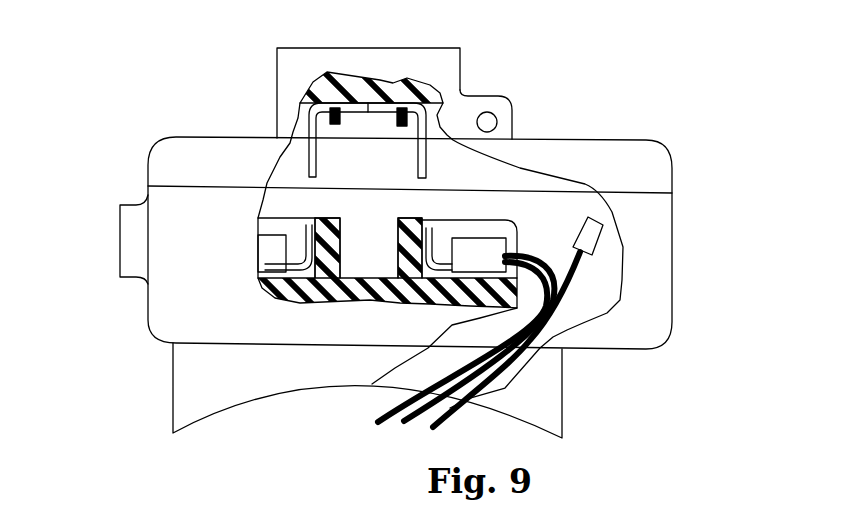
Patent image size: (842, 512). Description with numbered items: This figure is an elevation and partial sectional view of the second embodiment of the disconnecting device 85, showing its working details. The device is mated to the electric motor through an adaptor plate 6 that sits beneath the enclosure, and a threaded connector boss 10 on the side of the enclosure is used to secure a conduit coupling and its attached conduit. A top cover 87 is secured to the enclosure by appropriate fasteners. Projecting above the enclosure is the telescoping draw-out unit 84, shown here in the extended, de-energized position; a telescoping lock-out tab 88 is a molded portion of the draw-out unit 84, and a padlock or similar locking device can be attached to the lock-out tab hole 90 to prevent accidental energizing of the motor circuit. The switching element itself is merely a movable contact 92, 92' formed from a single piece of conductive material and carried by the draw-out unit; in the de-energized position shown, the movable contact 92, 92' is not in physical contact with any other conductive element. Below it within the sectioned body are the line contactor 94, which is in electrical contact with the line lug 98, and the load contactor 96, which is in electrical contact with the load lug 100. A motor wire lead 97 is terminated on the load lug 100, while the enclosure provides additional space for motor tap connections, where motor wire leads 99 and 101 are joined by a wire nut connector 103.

The adaptor plate 6 is at (563, 404).
The threaded connector boss 10 is at (124, 283).
The telescoping draw-out unit 84 is at (277, 97).
The disconnecting device 85 is at (673, 283).
The top cover 87 is at (673, 172).
The telescoping lock-out tab 88 is at (483, 94).
The lock-out tab hole 90 is at (498, 121).
The movable contact 92 is at (338, 140).
The movable contact 92' is at (397, 140).
The line contactor 94 is at (305, 222).
The load contactor 96 is at (432, 226).
The motor wire lead 97 is at (384, 398).
The line lug 98 is at (270, 252).
The motor wire lead 99 is at (400, 414).
The load lug 100 is at (478, 238).
The motor wire lead 101 is at (440, 410).
The wire nut connector 103 is at (581, 231).